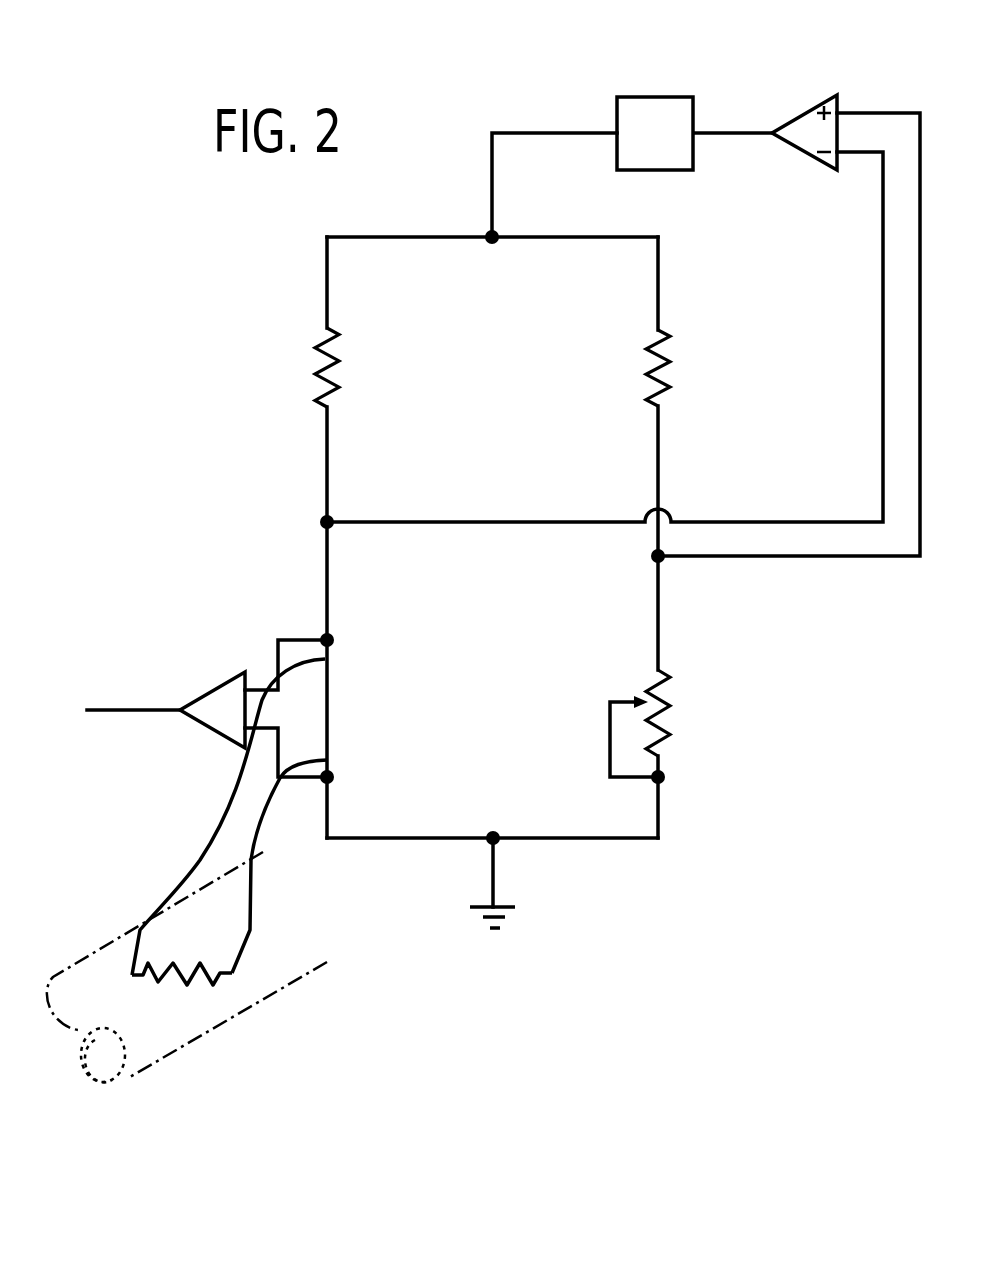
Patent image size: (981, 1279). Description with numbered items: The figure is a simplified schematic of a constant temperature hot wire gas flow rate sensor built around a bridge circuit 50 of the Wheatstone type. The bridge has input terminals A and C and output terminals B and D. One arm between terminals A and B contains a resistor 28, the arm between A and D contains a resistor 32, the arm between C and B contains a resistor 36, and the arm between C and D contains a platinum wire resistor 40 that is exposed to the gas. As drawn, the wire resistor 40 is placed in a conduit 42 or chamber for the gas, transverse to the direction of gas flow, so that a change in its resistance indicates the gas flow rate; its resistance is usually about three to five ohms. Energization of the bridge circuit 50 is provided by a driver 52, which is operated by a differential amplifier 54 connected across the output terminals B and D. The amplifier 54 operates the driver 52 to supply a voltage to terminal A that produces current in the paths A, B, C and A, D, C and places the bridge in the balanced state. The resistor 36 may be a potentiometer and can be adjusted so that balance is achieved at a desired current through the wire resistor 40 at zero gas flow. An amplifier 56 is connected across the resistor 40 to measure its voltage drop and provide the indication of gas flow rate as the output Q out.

The resistor 28 is at (666, 376).
The resistor 32 is at (318, 373).
The resistor 36 is at (671, 714).
The resistor 40 is at (158, 985).
The conduit 42 is at (227, 1020).
The bridge circuit 50 is at (167, 595).
The driver 52 is at (653, 96).
The differential amplifier 54 is at (803, 111).
The amplifier 56 is at (213, 732).